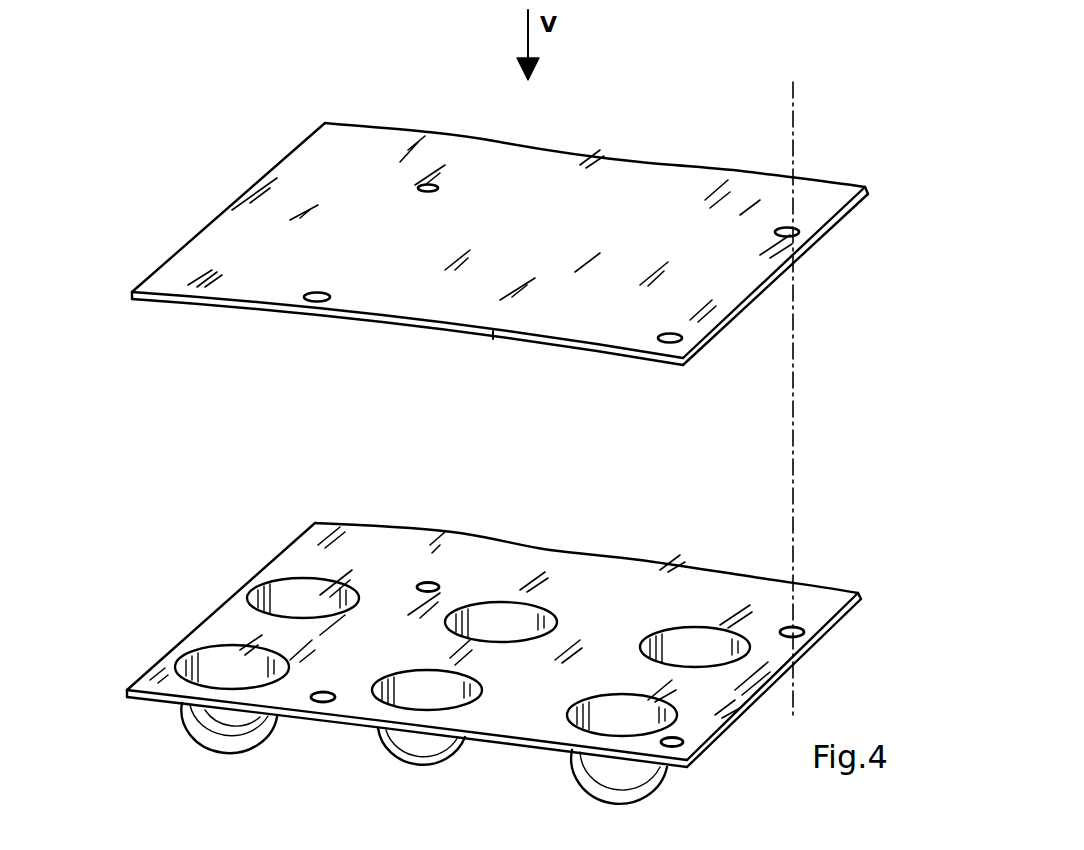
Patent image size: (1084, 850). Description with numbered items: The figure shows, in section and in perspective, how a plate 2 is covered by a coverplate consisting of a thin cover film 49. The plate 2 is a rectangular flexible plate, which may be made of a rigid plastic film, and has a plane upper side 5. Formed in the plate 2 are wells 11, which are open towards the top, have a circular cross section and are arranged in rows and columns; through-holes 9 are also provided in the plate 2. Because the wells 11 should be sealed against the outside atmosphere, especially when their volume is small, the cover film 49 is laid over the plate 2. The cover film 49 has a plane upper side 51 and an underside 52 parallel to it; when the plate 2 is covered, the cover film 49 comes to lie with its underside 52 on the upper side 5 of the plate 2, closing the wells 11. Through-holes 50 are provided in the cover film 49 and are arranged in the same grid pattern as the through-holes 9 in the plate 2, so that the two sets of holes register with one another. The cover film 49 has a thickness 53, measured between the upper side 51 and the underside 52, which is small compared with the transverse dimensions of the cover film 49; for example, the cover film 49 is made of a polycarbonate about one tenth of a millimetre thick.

The plate 2 is at (562, 572).
The upper side 5 is at (478, 553).
The through-holes 9 is at (321, 703).
The wells 11 is at (295, 598).
The cover film 49 is at (746, 182).
The through-holes 50 is at (800, 230).
The upper side 51 is at (633, 178).
The underside 52 is at (403, 333).
The thickness 53 is at (493, 293).